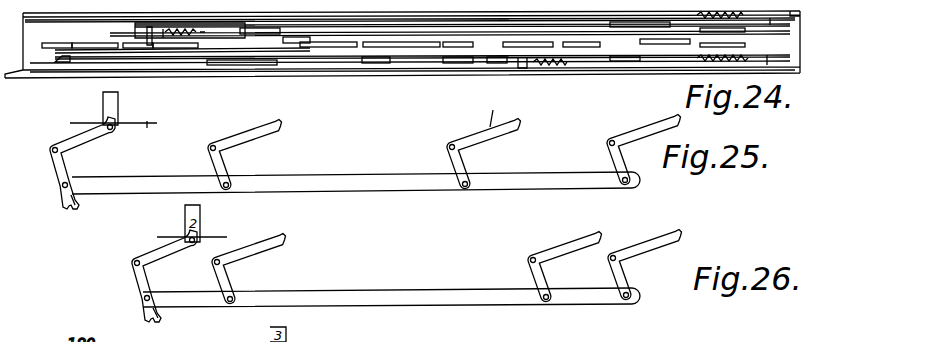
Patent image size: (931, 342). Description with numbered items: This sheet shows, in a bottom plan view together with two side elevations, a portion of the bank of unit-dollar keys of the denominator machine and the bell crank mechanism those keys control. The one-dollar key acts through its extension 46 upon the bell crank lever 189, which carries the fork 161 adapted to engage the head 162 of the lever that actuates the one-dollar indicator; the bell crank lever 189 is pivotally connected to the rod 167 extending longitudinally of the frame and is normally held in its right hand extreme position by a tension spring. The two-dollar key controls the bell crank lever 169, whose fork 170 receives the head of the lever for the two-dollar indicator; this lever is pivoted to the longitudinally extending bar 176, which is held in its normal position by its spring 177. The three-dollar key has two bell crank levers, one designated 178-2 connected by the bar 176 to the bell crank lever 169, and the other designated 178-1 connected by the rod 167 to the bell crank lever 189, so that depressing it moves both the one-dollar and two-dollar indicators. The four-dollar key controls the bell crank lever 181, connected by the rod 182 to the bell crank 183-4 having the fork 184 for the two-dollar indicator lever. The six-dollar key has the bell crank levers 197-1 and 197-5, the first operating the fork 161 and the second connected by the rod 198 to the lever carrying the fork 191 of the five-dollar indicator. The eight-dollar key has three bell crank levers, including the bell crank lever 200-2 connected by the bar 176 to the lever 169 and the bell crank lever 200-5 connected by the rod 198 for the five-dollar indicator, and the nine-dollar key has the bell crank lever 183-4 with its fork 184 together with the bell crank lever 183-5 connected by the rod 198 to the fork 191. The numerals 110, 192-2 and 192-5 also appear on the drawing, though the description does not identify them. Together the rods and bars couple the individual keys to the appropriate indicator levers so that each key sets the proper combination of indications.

In FIG. 24, the extension 46 is at (402, 44).
In FIG. 25, the extension 46 is at (118, 122).
In FIG. 25, the pivot axis line 110 is at (116, 133).
In FIG. 24, the fork 161 is at (68, 58).
In FIG. 25, the fork 161 is at (75, 205).
In FIG. 24, the head 162 is at (568, 63).
In FIG. 24, the rod 167 is at (417, 55).
In FIG. 25, the rod 167 is at (356, 176).
In FIG. 24, the bell crank lever 169 is at (130, 43).
In FIG. 26, the bell crank lever 169 is at (153, 258).
In FIG. 24, the fork 170 is at (152, 48).
In FIG. 26, the fork 170 is at (165, 315).
In FIG. 24, the bar 176 is at (370, 23).
In FIG. 26, the bar 176 is at (391, 289).
In FIG. 24, the spring 177 is at (185, 40).
In FIG. 24, the bell crank lever 178-1 is at (245, 60).
In FIG. 24, the bell crank lever 178-2 is at (265, 33).
In FIG. 26, the bell crank lever 178-2 is at (248, 269).
In FIG. 24, the bell crank lever 181 is at (333, 36).
In FIG. 24, the rod 182 is at (407, 35).
In FIG. 24, the bell crank lever 183-4 is at (748, 28).
In FIG. 24, the bell crank lever 183-5 is at (745, 45).
In FIG. 24, the fork 184 is at (705, 33).
In FIG. 24, the bell crank lever 189 is at (52, 39).
In FIG. 25, the bell crank lever 189 is at (82, 163).
In FIG. 24, the fork 191 is at (388, 50).
In FIG. 24, the slider 192-2 is at (585, 97).
In FIG. 24, the slider 192-5 is at (560, 25).
In FIG. 24, the bell crank lever 197-1 is at (487, 62).
In FIG. 24, the bell crank lever 197-5 is at (468, 47).
In FIG. 24, the rod 198 is at (620, 88).
In FIG. 24, the bell crank lever 200-2 is at (635, 22).
In FIG. 26, the bell crank lever 200-2 is at (644, 259).
In FIG. 24, the bell crank lever 200-5 is at (665, 42).